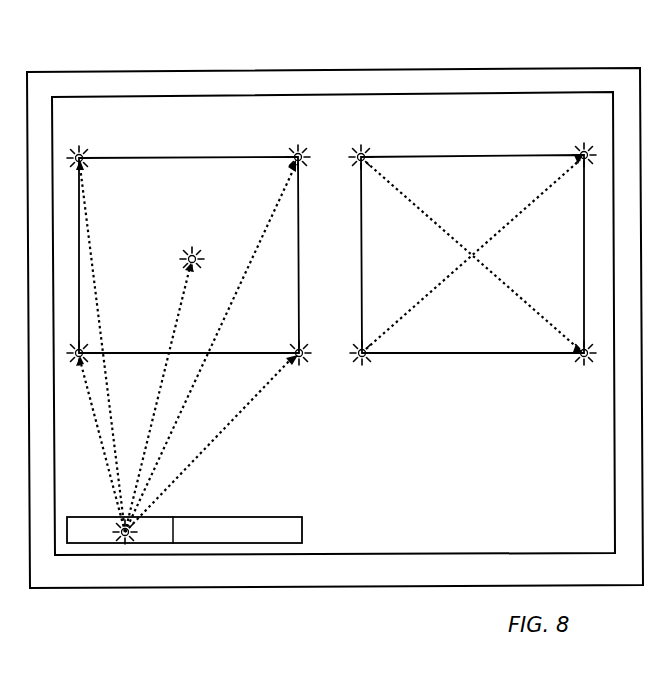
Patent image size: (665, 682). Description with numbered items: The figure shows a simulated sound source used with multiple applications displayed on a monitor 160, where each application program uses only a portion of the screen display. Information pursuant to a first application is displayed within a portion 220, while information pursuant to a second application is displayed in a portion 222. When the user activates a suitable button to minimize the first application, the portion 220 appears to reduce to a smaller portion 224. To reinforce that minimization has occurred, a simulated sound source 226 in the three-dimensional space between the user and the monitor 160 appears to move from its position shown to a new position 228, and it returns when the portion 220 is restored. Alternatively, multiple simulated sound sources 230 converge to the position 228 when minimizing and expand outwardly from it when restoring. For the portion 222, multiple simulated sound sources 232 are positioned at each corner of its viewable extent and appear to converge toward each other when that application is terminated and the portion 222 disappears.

The monitor 160 is at (512, 68).
The portion 220 is at (178, 157).
The portion 222 is at (451, 156).
The smaller portion 224 is at (158, 545).
The simulated sound source 226 is at (186, 256).
The new position 228 is at (120, 540).
The multiple simulated sound sources 230 is at (88, 164).
The multiple simulated sound sources 232 is at (361, 152).